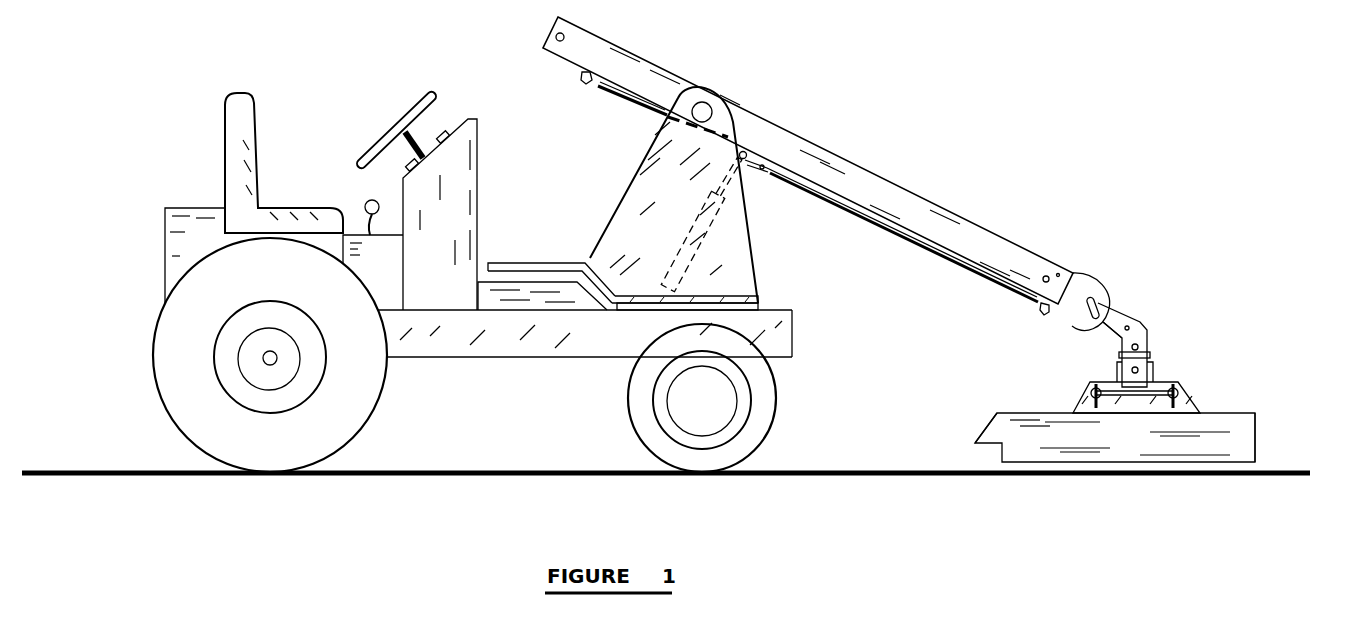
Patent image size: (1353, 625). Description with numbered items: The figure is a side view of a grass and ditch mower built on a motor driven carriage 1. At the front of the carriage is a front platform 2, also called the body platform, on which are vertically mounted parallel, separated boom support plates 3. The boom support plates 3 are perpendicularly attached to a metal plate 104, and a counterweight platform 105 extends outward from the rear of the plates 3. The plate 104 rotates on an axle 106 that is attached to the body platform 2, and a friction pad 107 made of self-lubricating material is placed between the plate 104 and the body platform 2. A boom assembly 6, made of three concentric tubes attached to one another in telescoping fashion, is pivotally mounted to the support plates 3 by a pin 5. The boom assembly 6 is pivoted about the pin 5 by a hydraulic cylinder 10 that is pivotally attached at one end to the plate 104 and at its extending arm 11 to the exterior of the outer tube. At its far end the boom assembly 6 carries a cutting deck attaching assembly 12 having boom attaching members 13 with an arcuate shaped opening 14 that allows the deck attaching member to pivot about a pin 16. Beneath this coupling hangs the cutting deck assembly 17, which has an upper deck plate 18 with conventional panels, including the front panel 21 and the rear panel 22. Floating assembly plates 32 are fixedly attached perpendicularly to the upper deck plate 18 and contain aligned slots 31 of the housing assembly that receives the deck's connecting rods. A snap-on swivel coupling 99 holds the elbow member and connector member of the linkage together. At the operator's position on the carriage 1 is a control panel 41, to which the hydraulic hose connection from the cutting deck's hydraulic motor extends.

The motor driven carriage 1 is at (311, 116).
The front platform 2 is at (480, 340).
The boom support plates 3 is at (636, 207).
The pin 5 is at (705, 110).
The boom assembly 6 is at (977, 205).
The hydraulic cylinder 10 is at (683, 237).
The extending arm 11 is at (752, 156).
The cutting deck attaching assembly 12 is at (1142, 318).
The boom attaching members 13 is at (1083, 290).
The arcuate shaped opening 14 is at (1105, 311).
The pin 16 is at (1078, 306).
The cutting deck assembly 17 is at (1142, 414).
The upper deck plate 18 is at (1232, 413).
The front panel 21 is at (985, 430).
The rear panel 22 is at (1258, 422).
The slots 31 is at (1178, 398).
The floating assembly plate pair 32 is at (1142, 383).
The control panel 41 is at (450, 97).
The snap-on swivel coupling 99 is at (1152, 356).
The metal plate 104 is at (737, 295).
The counterweight platform 105 is at (548, 263).
The axle 106 is at (648, 313).
The friction pad 107 is at (768, 305).